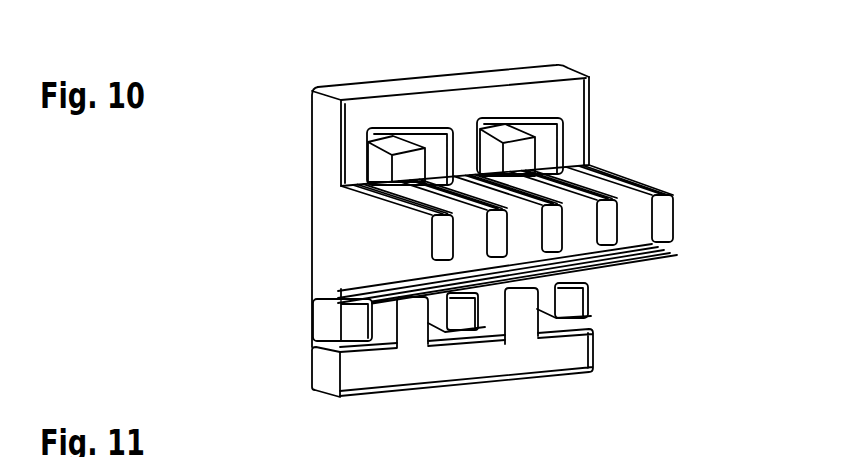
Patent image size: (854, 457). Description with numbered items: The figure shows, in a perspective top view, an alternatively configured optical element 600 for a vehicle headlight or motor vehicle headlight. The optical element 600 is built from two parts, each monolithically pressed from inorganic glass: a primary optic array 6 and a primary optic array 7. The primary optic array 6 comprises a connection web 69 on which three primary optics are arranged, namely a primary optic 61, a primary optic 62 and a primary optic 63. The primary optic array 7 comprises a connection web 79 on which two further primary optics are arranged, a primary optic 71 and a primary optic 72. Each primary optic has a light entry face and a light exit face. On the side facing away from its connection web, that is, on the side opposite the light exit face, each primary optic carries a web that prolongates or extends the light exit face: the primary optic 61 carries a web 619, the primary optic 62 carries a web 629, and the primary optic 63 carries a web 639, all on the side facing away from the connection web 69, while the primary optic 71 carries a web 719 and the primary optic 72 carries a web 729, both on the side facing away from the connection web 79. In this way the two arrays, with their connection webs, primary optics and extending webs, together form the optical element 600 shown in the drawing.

The optical element 600 is at (640, 83).
The primary optic array 6 is at (288, 198).
The primary optic 61 is at (355, 246).
The connection web 69 is at (463, 103).
The web 719 is at (410, 162).
The web 729 is at (522, 153).
The primary optic 62 is at (524, 221).
The primary optic 72 is at (577, 217).
The primary optic 63 is at (633, 212).
The primary optic 71 is at (480, 297).
The web 619 is at (357, 313).
The web 629 is at (477, 238).
The web 639 is at (577, 298).
The primary optic array 7 is at (588, 388).
The connection web 79 is at (394, 372).